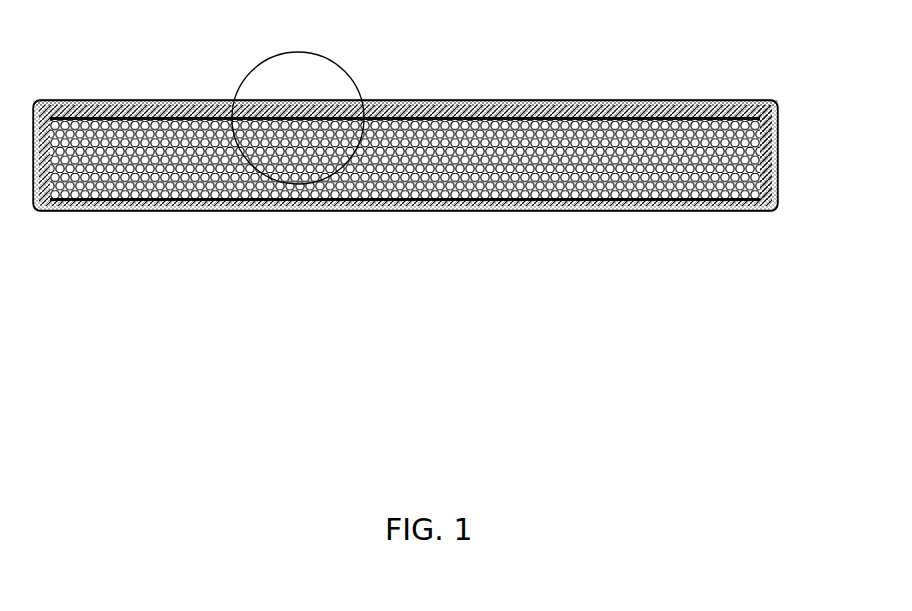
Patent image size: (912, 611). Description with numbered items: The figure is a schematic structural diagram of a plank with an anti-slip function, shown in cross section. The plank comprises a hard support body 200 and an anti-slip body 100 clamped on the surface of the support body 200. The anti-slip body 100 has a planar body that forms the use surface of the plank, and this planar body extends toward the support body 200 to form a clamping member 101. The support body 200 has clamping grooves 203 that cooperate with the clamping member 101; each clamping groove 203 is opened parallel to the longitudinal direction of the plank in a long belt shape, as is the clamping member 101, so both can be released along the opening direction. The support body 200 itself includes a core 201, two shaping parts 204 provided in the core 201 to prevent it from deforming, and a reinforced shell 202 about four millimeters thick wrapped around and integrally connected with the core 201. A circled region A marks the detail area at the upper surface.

The anti-slip body 100 is at (713, 104).
The clamping member 101 is at (688, 115).
The support body 200 is at (646, 100).
The core 201 is at (756, 150).
The reinforced shell 202 is at (742, 116).
The clamping groove 203 is at (635, 112).
The shaping part 204 is at (565, 104).
The enlarged region A is at (300, 77).